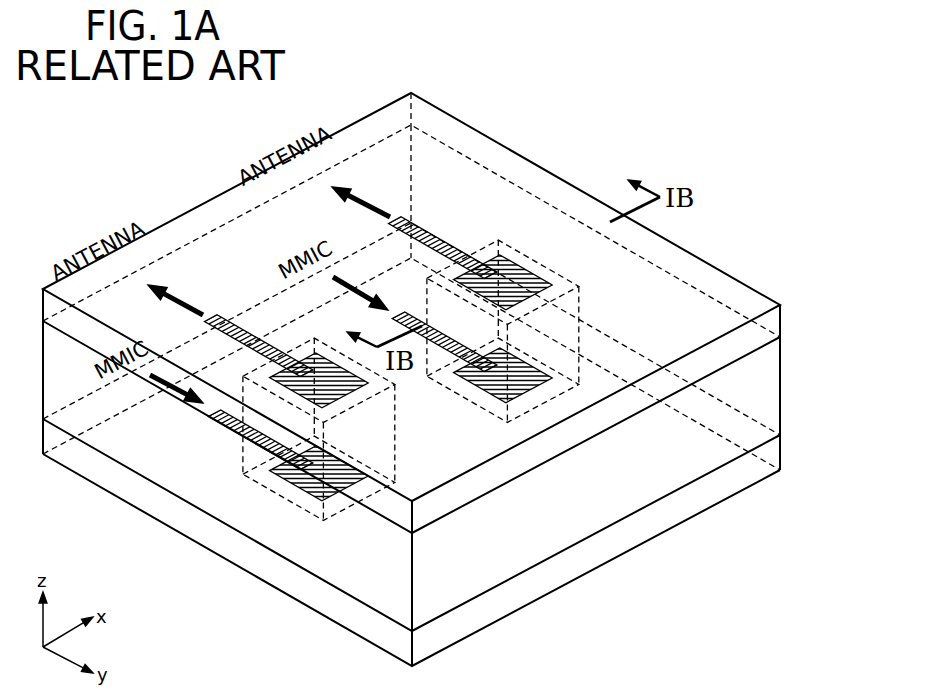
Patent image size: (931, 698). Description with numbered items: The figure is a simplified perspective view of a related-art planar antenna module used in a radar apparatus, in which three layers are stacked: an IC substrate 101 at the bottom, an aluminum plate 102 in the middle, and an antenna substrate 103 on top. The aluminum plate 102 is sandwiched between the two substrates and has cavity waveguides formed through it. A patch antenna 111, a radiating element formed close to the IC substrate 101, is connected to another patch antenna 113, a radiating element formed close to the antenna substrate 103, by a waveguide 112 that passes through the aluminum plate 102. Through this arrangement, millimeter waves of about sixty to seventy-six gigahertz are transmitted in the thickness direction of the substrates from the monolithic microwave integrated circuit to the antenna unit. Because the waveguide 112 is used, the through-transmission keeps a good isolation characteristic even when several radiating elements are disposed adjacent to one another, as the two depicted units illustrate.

The IC substrate 101 is at (780, 452).
The aluminum plate 102 is at (780, 383).
The antenna substrate 103 is at (780, 322).
The patch antenna 111 is at (458, 402).
The waveguide 112 is at (442, 391).
The patch antenna 113 is at (492, 262).